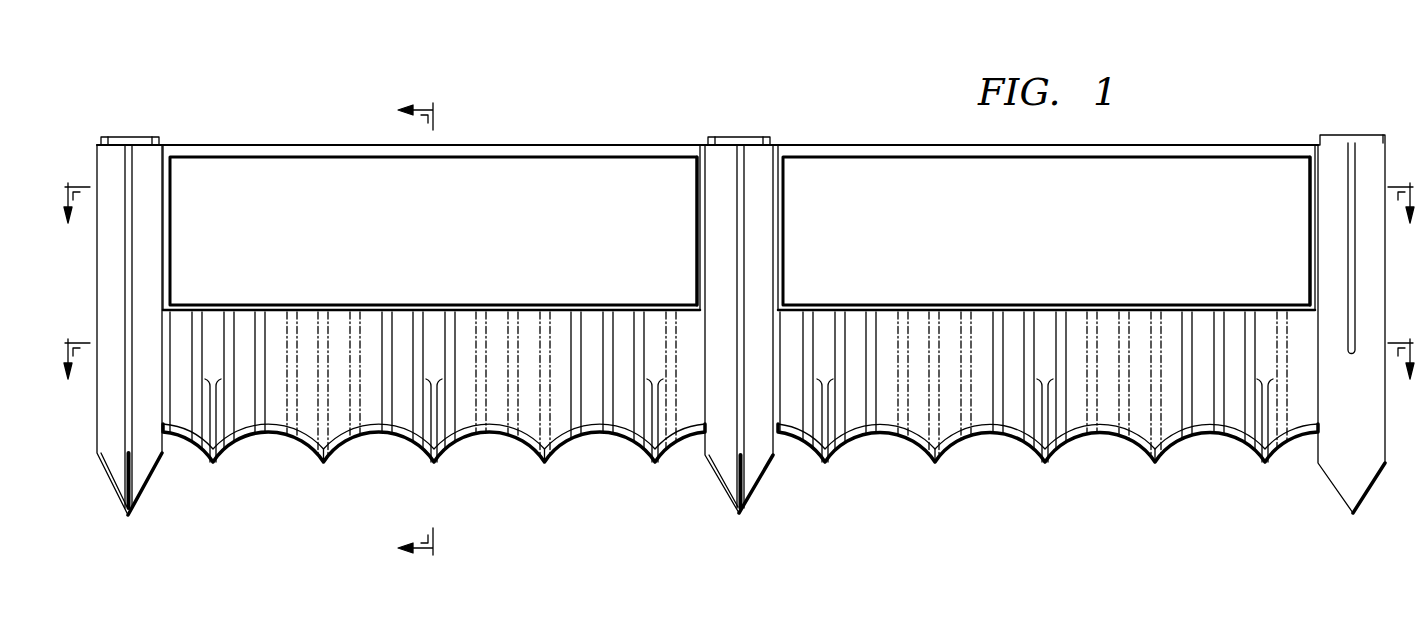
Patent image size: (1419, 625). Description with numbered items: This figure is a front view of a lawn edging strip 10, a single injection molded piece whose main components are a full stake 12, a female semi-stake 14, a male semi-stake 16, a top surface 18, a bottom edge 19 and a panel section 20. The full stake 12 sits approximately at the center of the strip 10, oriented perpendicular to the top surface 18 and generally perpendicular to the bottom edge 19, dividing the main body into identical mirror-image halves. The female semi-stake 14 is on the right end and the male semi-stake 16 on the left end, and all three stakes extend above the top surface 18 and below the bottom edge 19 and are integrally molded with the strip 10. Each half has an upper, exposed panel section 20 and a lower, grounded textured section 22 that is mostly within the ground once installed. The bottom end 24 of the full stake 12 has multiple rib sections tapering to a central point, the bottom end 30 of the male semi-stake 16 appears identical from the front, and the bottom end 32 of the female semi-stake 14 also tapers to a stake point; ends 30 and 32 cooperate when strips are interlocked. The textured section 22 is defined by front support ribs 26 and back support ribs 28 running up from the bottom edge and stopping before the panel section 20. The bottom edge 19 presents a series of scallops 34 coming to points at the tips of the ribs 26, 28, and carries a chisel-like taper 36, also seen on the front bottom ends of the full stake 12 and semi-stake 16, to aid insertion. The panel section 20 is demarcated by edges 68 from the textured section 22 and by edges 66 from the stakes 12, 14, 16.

The lawn edging strip 10 is at (230, 131).
The full stake 12 is at (767, 335).
The female semi-stake 14 is at (1360, 328).
The male semi-stake 16 is at (120, 340).
The top surface 18 is at (503, 145).
The bottom edge 19 is at (733, 429).
The panel section 20 is at (739, 227).
The textured section 22 is at (887, 402).
The bottom end of full stake 24 is at (740, 518).
The front support ribs 26 is at (213, 468).
The back support ribs 28 is at (324, 465).
The bottom end of male semi-stake 30 is at (128, 520).
The bottom end of female semi-stake 32 is at (1353, 518).
The scallops 34 is at (270, 440).
The chisel-like taper 36 is at (308, 450).
The edges between panel section and stakes 66 is at (697, 226).
The edges between panel section and textured section 68 is at (560, 308).